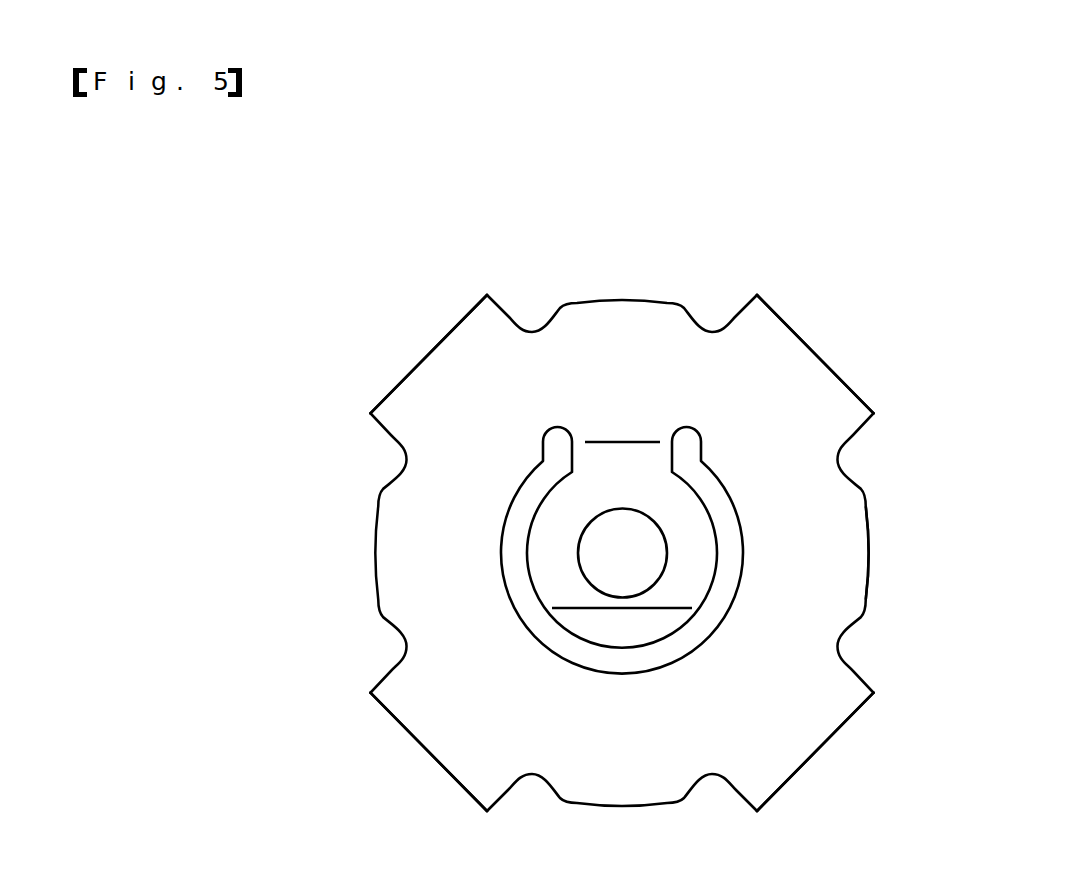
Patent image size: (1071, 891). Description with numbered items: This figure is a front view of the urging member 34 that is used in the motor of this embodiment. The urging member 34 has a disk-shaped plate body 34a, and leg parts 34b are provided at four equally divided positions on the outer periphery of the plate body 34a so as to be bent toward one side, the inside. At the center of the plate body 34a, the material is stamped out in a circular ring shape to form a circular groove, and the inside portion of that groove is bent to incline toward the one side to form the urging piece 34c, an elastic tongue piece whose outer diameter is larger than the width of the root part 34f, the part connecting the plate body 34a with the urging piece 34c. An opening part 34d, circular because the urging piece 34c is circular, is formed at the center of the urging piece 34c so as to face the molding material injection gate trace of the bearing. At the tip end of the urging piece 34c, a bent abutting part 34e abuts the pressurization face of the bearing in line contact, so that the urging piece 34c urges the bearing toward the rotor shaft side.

The urging member 34 is at (789, 309).
The plate body 34a is at (837, 507).
The leg parts 34b is at (430, 382).
The urging piece 34c is at (568, 523).
The opening part 34d is at (590, 553).
The abutting part 34e is at (628, 612).
The root part 34f is at (585, 457).